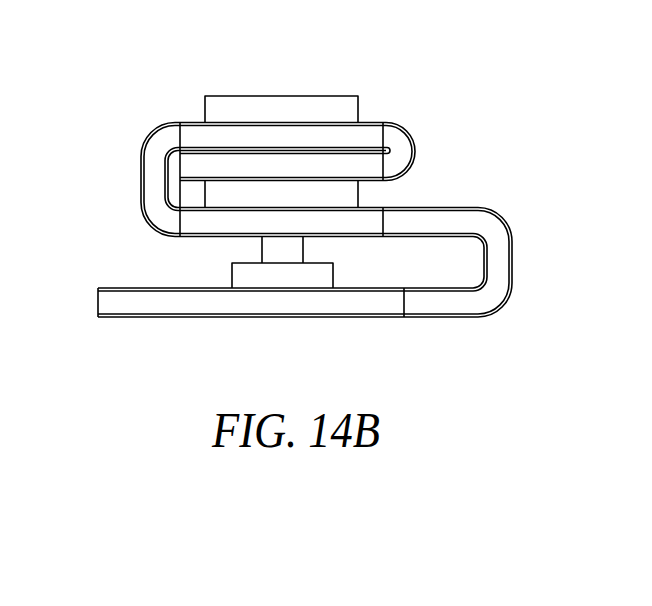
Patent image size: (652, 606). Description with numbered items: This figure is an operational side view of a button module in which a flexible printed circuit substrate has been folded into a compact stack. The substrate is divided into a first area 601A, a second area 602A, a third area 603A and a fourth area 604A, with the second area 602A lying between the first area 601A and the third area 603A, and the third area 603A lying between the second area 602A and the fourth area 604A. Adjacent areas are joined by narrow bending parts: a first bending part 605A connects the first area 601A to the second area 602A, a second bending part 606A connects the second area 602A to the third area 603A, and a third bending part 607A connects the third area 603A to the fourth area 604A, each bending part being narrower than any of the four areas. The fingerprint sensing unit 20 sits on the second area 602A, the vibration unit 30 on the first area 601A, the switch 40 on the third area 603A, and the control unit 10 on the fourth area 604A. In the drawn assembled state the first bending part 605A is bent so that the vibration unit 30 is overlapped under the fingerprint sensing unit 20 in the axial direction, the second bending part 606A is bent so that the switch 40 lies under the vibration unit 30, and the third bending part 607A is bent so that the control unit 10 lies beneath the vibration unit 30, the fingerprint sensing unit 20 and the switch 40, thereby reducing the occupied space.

The control unit 10 is at (242, 275).
The fingerprint sensing unit 20 is at (282, 108).
The vibration unit 30 is at (340, 192).
The switch 40 is at (273, 249).
The first area 601A is at (365, 133).
The second area 602A is at (197, 165).
The third area 603A is at (196, 223).
The fourth area 604A is at (313, 303).
The first bending part 605A is at (398, 141).
The second bending part 606A is at (153, 174).
The third bending part 607A is at (495, 260).